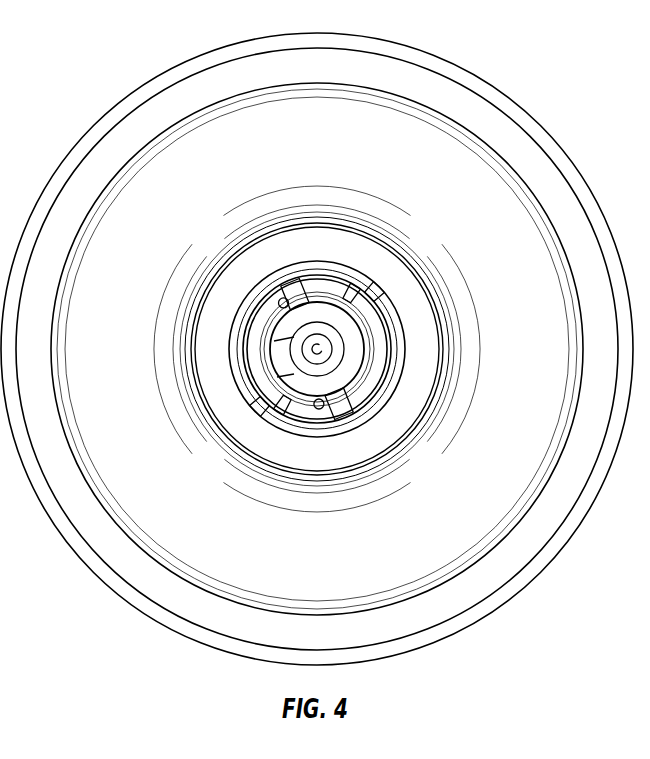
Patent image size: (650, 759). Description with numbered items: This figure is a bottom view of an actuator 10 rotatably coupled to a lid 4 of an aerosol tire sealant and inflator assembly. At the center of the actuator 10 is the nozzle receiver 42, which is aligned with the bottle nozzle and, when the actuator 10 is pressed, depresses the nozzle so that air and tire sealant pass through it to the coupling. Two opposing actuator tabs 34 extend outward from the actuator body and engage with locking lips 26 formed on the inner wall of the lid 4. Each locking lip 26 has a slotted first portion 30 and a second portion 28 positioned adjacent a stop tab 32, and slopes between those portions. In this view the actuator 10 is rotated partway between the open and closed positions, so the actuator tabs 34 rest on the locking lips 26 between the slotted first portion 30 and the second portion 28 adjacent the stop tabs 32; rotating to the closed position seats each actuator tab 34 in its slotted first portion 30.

The lid 4 is at (133, 69).
The actuator 10 is at (321, 314).
The locking lip 26 is at (249, 321).
The second portion 28 is at (248, 388).
The first portion 30 is at (355, 277).
The stop tab 32 is at (375, 295).
The actuator tab 34 is at (297, 280).
The nozzle receiver 42 is at (323, 350).